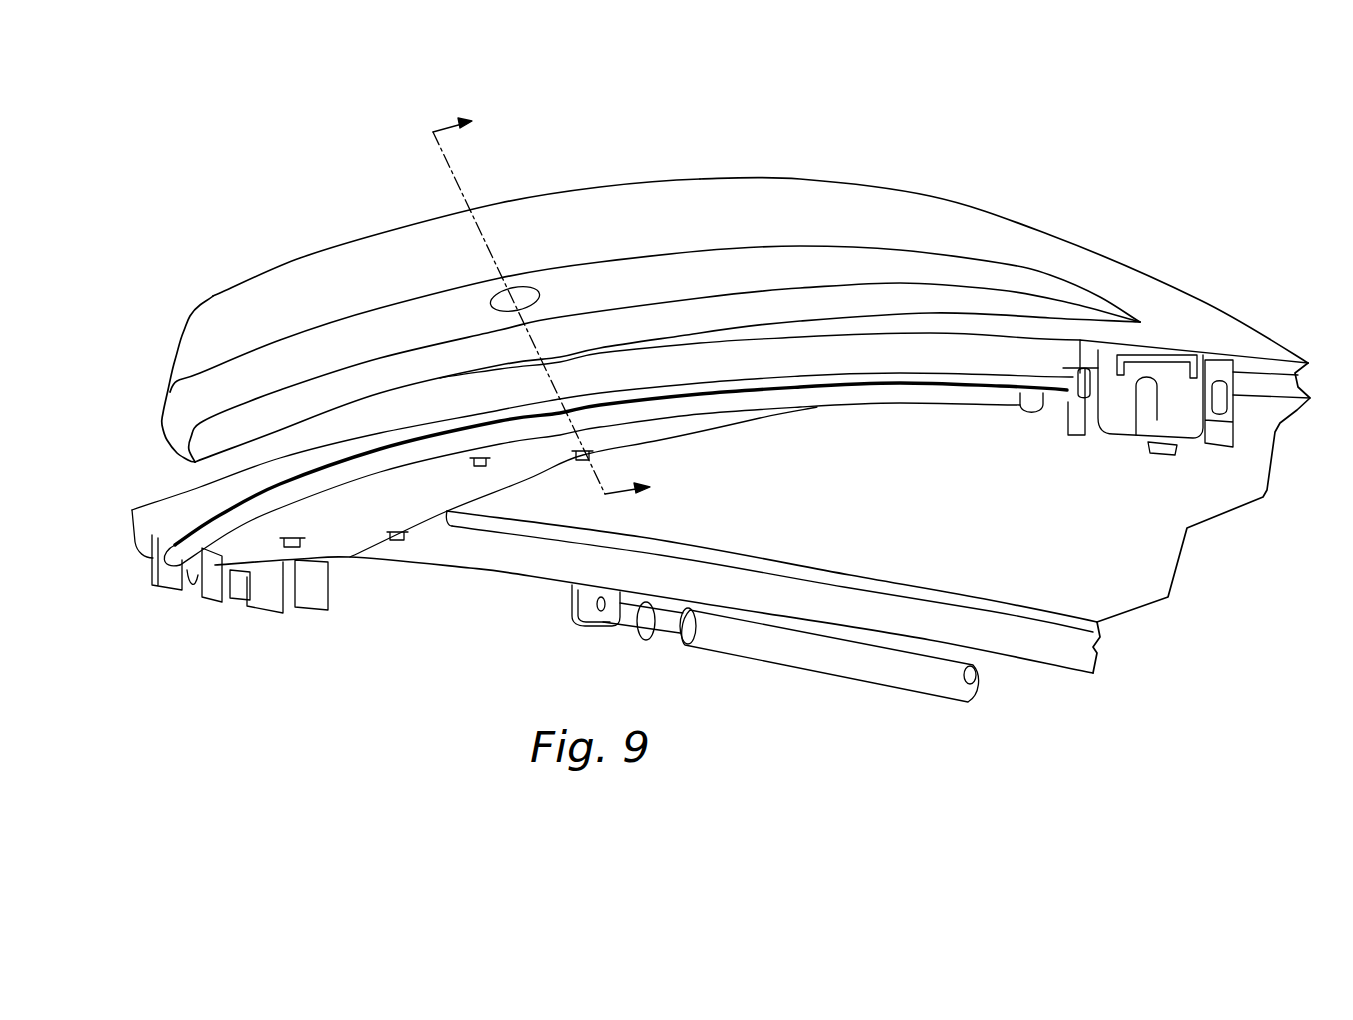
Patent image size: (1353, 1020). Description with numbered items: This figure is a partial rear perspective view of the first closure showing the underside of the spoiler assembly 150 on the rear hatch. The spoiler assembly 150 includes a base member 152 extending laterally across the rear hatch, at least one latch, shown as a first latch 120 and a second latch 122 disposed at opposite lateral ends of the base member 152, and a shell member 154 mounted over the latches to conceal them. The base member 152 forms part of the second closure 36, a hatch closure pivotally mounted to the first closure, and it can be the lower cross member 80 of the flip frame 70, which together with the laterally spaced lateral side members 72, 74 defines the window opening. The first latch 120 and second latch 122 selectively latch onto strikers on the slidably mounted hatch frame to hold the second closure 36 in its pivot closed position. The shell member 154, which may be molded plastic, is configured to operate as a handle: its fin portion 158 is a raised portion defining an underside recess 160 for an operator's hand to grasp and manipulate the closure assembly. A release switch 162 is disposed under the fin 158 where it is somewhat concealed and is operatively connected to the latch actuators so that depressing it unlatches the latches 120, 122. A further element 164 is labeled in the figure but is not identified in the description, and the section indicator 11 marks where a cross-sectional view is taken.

The spoiler assembly 150 is at (720, 319).
The fin portion 158 is at (293, 297).
The shell member 154 is at (1048, 255).
The underside recess 160 is at (748, 278).
The release switch 162 is at (535, 292).
The lower flange rail 164 is at (873, 393).
The lower cross member 80 is at (640, 540).
The base member 152 is at (365, 515).
The first latch 120 is at (170, 580).
The second closure 36 is at (1090, 563).
The lateral side member 72 is at (1010, 632).
The flip frame 70 is at (805, 593).
The lateral side member 74 is at (1267, 385).
The second latch 122 is at (1125, 412).
The section line 11 is at (555, 307).